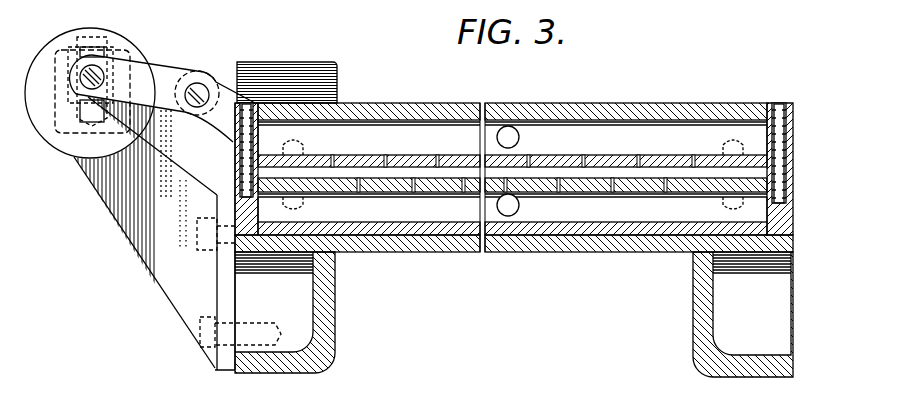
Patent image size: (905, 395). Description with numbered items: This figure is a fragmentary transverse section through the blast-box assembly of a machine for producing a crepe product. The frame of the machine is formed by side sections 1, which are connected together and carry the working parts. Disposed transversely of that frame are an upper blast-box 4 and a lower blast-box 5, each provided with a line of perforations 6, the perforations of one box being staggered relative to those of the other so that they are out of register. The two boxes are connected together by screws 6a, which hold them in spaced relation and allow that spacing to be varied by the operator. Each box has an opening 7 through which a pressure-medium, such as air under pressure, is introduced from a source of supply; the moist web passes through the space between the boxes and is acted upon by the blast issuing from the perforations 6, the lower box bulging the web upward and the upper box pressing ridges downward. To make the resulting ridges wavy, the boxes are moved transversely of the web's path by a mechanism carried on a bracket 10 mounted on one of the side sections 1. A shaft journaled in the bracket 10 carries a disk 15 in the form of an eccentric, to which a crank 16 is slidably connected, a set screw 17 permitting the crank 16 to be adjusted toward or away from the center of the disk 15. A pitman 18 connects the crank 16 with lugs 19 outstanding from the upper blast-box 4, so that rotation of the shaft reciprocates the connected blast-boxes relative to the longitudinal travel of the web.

The side sections 1 is at (330, 315).
The upper blast-box 4 is at (715, 104).
The lower blast-box 5 is at (644, 214).
The perforations 6 is at (585, 156).
The screws 6a is at (253, 105).
The opening 7 is at (510, 127).
The bracket 10 is at (172, 290).
The disk 15 is at (147, 133).
The crank 16 is at (104, 74).
The set screw 17 is at (90, 79).
The pitman 18 is at (181, 68).
The lugs 19 is at (230, 92).